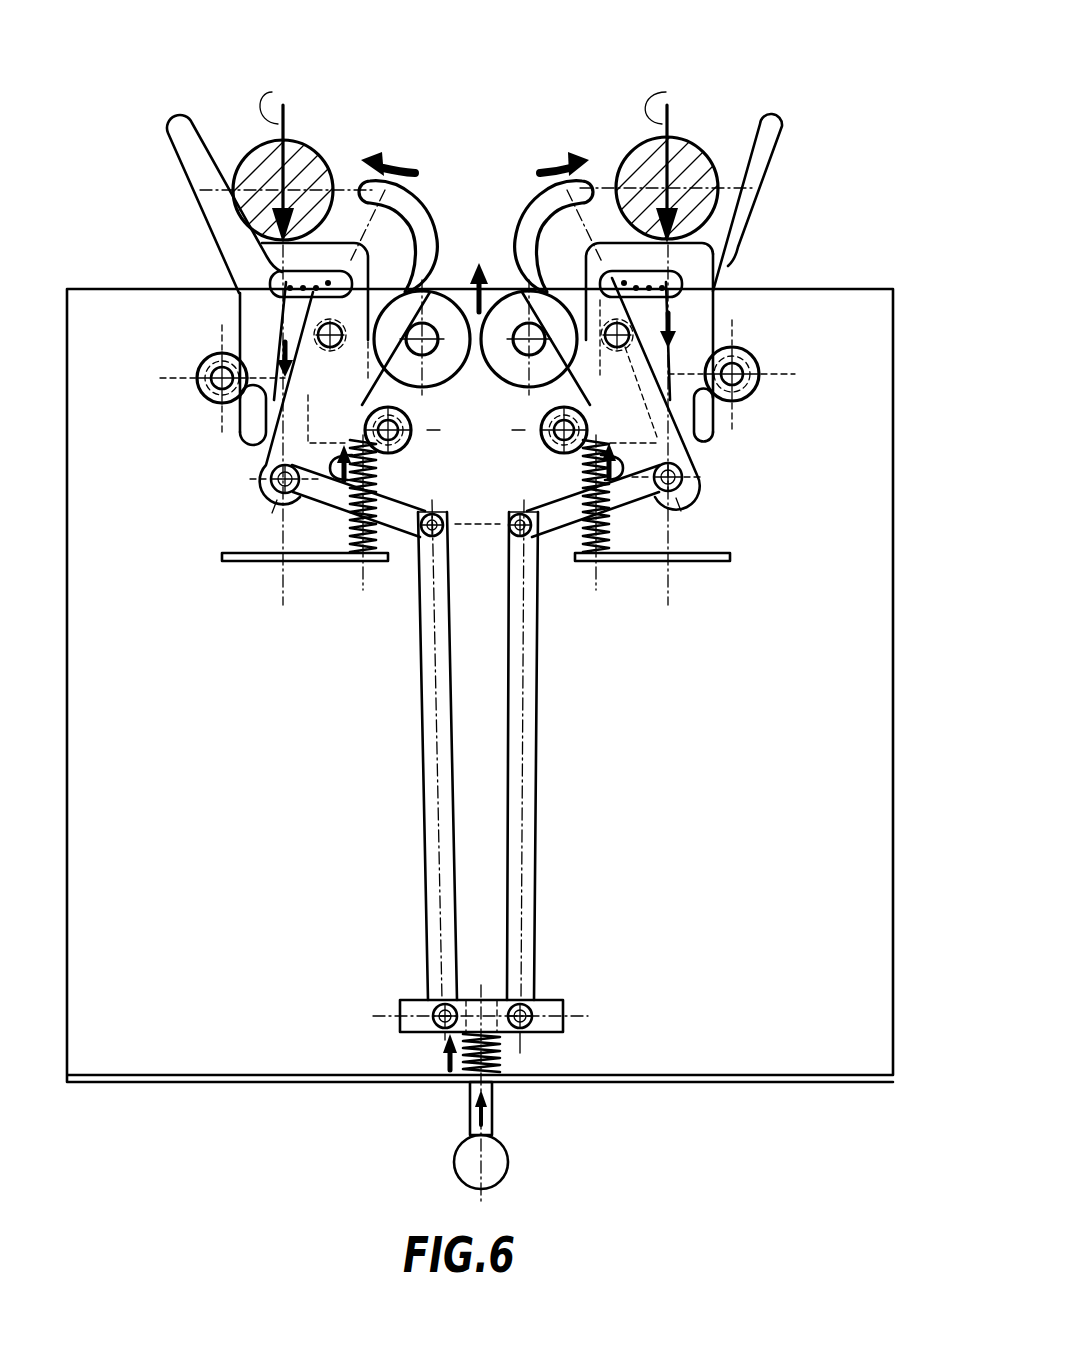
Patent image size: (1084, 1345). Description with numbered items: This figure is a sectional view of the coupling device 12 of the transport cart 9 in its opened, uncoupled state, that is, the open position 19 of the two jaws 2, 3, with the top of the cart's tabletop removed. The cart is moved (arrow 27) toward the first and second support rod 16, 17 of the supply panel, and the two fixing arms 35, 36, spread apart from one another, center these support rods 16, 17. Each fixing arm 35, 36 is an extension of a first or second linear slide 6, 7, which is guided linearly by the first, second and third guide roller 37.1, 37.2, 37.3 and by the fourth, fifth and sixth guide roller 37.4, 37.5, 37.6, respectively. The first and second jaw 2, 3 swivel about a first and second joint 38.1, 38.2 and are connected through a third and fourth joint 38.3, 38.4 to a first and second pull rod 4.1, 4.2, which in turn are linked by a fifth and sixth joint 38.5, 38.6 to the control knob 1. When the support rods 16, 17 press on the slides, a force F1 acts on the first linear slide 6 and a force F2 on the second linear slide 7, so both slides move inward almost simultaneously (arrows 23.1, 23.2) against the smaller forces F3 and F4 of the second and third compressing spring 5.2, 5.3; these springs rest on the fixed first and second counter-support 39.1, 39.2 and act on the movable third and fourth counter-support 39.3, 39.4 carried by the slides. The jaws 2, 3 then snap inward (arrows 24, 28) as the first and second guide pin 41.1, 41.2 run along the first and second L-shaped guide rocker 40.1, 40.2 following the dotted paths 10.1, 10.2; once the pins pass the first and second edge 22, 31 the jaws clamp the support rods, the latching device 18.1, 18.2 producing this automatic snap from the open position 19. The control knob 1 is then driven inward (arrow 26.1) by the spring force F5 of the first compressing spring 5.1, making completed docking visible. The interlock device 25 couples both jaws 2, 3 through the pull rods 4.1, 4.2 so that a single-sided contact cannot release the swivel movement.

The control knob 1 is at (508, 1160).
The open position 19 is at (512, 68).
The coupling device 12 is at (511, 161).
The first jaw 2 is at (408, 208).
The second jaw 3 is at (537, 213).
The first pull rod 4.1 is at (430, 765).
The second pull rod 4.2 is at (537, 757).
The first compressing spring 5.1 is at (500, 1053).
The second compressing spring 5.2 is at (388, 466).
The third compressing spring 5.3 is at (555, 482).
The first linear slide 6 is at (260, 350).
The second linear slide 7 is at (700, 334).
The transport cart 9 is at (254, 1093).
The path 10.1 is at (283, 272).
The path 10.2 is at (668, 252).
The first support rod 16 is at (246, 152).
The second support rod 17 is at (676, 148).
The latching device 18.1 is at (283, 340).
The latching device 18.2 is at (660, 305).
The first edge 22 is at (329, 282).
The arrow 23.1 is at (302, 308).
The arrow 23.2 is at (702, 318).
The arrow 24 is at (403, 156).
The interlock device 25 is at (486, 980).
The arrow 26.1 is at (493, 1108).
The arrow 27 is at (459, 288).
The arrow 28 is at (540, 158).
The second edge 31 is at (589, 288).
The first fixing arm 35 is at (190, 137).
The second fixing arm 36 is at (768, 116).
The first guide roller 37.1 is at (198, 392).
The second guide roller 37.2 is at (407, 430).
The third guide roller 37.3 is at (438, 345).
The fourth guide roller 37.4 is at (556, 446).
The fifth guide roller 37.5 is at (760, 372).
The sixth guide roller 37.6 is at (489, 255).
The first joint 38.1 is at (253, 493).
The second joint 38.2 is at (718, 481).
The third joint 38.3 is at (409, 545).
The fourth joint 38.4 is at (552, 545).
The fifth joint 38.5 is at (416, 985).
The sixth joint 38.6 is at (550, 985).
The first counter-support 39.1 is at (340, 544).
The second counter-support 39.2 is at (622, 532).
The third counter-support 39.3 is at (346, 437).
The fourth counter-support 39.4 is at (604, 430).
The first L-shaped guide rocker 40.1 is at (266, 273).
The second L-shaped guide rocker 40.2 is at (683, 264).
The first guide pin 41.1 is at (262, 408).
The second guide pin 41.2 is at (722, 410).
The force F1 is at (278, 161).
The force F2 is at (663, 161).
The force F3 is at (300, 475).
The force F4 is at (652, 463).
The spring force F5 is at (443, 1062).